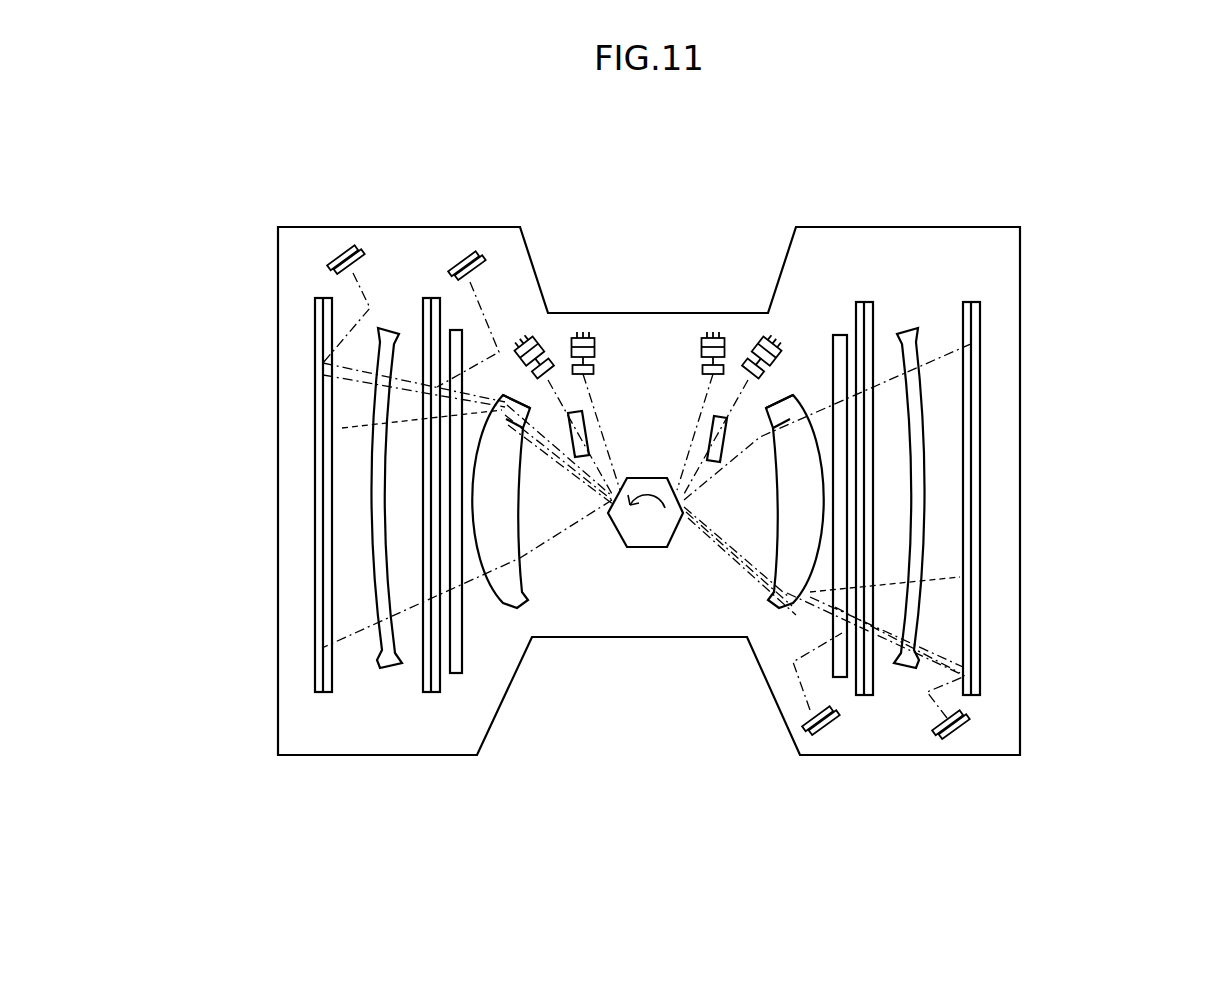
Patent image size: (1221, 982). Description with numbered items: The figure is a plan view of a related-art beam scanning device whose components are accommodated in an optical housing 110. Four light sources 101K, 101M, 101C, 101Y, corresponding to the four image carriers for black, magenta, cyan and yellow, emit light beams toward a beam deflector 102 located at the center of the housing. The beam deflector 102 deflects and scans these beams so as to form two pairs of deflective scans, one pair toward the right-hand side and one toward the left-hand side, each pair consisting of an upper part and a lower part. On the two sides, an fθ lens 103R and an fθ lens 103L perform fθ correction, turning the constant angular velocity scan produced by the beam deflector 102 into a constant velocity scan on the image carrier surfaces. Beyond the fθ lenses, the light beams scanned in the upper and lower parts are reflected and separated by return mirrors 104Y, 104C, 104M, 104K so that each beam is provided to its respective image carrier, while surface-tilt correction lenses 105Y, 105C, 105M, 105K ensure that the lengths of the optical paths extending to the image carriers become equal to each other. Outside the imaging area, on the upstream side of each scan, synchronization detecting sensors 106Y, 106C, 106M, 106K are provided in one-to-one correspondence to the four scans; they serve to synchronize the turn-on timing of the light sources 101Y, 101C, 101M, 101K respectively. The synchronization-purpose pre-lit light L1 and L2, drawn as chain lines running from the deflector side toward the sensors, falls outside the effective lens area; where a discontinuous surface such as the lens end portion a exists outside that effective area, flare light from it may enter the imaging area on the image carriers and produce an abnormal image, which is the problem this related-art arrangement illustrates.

The optical housing 110 is at (859, 227).
The beam deflector 102 is at (640, 528).
The fθ lens 103L is at (515, 612).
The fθ lens 103R is at (778, 612).
The return mirror 104Y is at (322, 398).
The return mirror 104C is at (432, 515).
The return mirror 104M is at (867, 320).
The return mirror 104K is at (975, 440).
The surface-tilt correction lens 105Y is at (378, 465).
The surface-tilt correction lens 105C is at (455, 552).
The surface-tilt correction lens 105M is at (840, 538).
The surface-tilt correction lens 105K is at (922, 515).
The light source 101Y is at (534, 335).
The light source 101C is at (590, 332).
The light source 101M is at (706, 332).
The light source 101K is at (760, 335).
The synchronization detecting sensor 106Y is at (343, 247).
The synchronization detecting sensor 106C is at (472, 247).
The synchronization detecting sensor 106M is at (822, 732).
The synchronization detecting sensor 106K is at (950, 737).
The synchronization-purpose pre-lit light L1 is at (737, 553).
The synchronization-purpose pre-lit light L2 is at (543, 428).
The lens end portion a is at (498, 402).